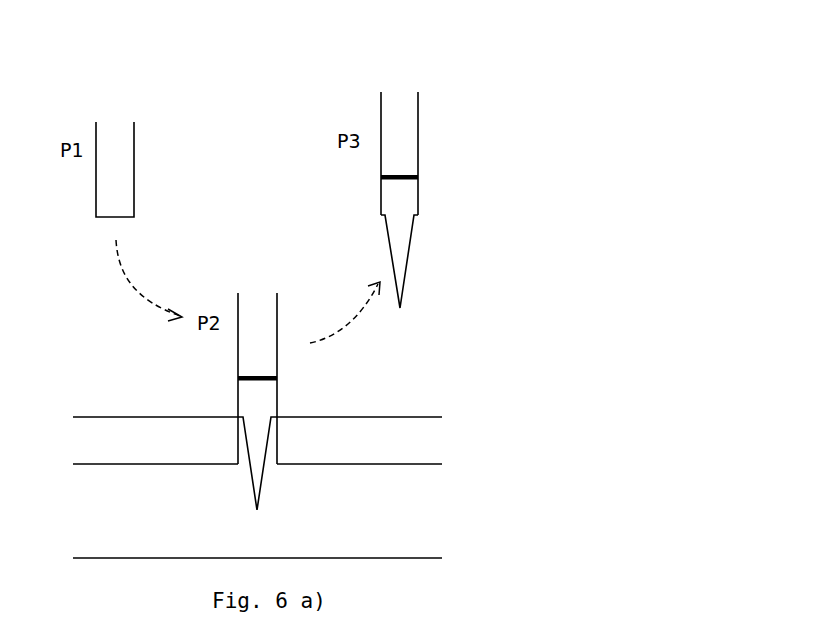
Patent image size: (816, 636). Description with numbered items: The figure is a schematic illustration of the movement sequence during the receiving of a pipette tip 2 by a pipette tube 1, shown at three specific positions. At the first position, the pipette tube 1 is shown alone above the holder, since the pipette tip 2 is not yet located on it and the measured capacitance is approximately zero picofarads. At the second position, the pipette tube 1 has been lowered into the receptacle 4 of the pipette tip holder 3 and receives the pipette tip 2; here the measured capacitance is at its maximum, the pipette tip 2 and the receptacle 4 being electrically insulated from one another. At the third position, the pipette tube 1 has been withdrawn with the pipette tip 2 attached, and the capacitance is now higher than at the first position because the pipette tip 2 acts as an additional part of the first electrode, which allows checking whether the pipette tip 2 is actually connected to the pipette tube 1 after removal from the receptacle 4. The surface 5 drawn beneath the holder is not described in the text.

The pipette tube 1 is at (112, 150).
The pipette tip 2 is at (279, 398).
The pipette tip holder 3 is at (360, 417).
The receptacle 4 is at (271, 465).
The surface 5 is at (425, 553).